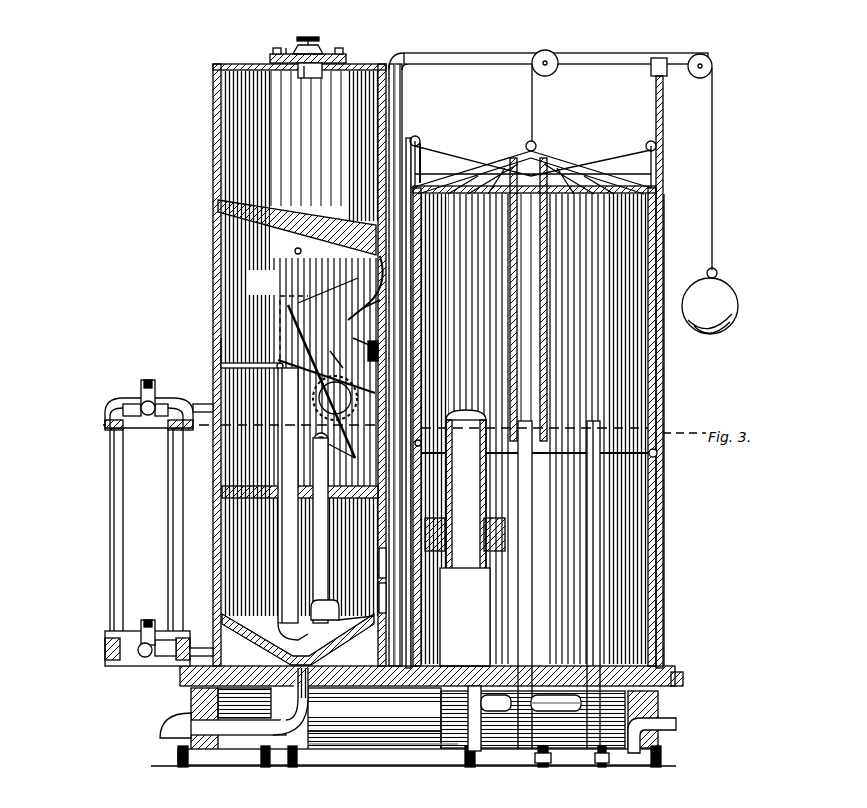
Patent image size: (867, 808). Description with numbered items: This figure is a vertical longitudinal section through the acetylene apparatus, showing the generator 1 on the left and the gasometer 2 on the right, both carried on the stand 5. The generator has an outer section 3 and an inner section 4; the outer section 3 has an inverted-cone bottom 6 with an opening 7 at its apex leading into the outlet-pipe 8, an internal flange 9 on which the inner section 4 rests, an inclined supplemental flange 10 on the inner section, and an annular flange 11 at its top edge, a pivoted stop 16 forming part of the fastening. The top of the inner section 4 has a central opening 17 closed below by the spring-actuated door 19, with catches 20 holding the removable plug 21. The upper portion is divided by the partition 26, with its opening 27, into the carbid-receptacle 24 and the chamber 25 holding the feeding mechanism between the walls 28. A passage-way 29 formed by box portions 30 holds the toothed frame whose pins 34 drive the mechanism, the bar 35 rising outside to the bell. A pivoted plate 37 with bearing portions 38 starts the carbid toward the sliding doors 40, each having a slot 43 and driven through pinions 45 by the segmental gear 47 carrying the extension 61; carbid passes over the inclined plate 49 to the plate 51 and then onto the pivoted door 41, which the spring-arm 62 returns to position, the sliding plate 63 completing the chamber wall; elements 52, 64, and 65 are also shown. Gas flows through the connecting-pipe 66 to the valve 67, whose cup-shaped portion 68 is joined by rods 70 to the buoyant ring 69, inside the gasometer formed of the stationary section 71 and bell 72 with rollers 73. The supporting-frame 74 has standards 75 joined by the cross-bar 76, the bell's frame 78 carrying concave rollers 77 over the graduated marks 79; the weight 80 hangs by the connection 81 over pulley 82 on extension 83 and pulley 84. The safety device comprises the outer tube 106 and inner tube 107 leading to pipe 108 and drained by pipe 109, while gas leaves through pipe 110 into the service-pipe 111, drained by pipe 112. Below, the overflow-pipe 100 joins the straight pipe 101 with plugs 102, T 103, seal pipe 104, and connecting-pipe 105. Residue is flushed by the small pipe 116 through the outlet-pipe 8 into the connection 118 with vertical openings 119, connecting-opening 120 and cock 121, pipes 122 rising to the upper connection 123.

The generator 1 is at (206, 345).
The gasometer 2 is at (546, 426).
The outer section 3 is at (212, 550).
The inner section 4 is at (206, 233).
The support or stand 5 is at (370, 750).
The bottom 6 is at (349, 627).
The opening 7 is at (298, 640).
The outlet-pipe 8 is at (232, 728).
The internally-arranged flange 9 is at (313, 500).
The supplemental flange 10 is at (312, 478).
The annular flange 11 is at (206, 354).
The stop 16 is at (312, 68).
The central opening 17 is at (306, 45).
The spring-actuated door or valve 19 is at (298, 70).
The catches 20 is at (264, 44).
The removable plug 21 is at (278, 44).
The carbid-receptacle chamber 24 is at (309, 138).
The chamber 25 is at (230, 290).
The partition 26 is at (297, 227).
The opening 27 is at (368, 256).
The walls 28 is at (263, 282).
The supplemental chamber or passage-way 29 is at (395, 104).
The box portions 30 is at (395, 82).
The pins 34 is at (385, 598).
The bar 35 is at (413, 156).
The plate 37 is at (328, 293).
The bearing portions 38 is at (385, 563).
The doors 40 is at (295, 330).
The door 41 is at (268, 352).
The central elongated slot 43 is at (335, 398).
The pinions 45 is at (335, 357).
The segmental gear 47 is at (365, 354).
The plate 49 is at (368, 313).
The plate 51 is at (272, 354).
The link 52 is at (359, 338).
The extension 61 is at (288, 495).
The spring-arm 62 is at (288, 388).
The sliding plate 63 is at (271, 300).
The pivot 64 is at (310, 440).
The pipe 65 is at (293, 591).
The connecting-pipe 66 is at (468, 584).
The valve 67 is at (480, 543).
The inverted-cup-shaped portion 68 is at (462, 406).
The ring-shaped portion 69 is at (498, 522).
The depending rods 70 is at (478, 490).
The stationary section 71 is at (573, 587).
The bell or telescoping section 72 is at (548, 338).
The rollers 73 is at (440, 390).
The supporting-frame 74 is at (679, 430).
The vertical standards 75 is at (404, 122).
The cross-bar 76 is at (498, 58).
The concave rollers 77 is at (413, 135).
The frame 78 is at (518, 136).
The graduated marks 79 is at (656, 228).
The weight 80 is at (730, 302).
The connection 81 is at (706, 156).
The pulley 82 is at (704, 62).
The extension 83 is at (665, 68).
The pulley 84 is at (550, 50).
The overflow-pipe 100 is at (285, 730).
The pipe 101 is at (405, 752).
The removable plugs 102 is at (170, 748).
The T 103 is at (600, 757).
The short pipe 104 is at (668, 720).
The connecting-pipe 105 is at (463, 758).
The outer tubular portion 106 is at (540, 293).
The inner tubular portion 107 is at (556, 669).
The pipe 108 is at (485, 688).
The pipe 109 is at (563, 732).
The pipe 110 is at (580, 548).
The service-pipe 111 is at (540, 688).
The pipe 112 is at (540, 756).
The small pipe 116 is at (325, 599).
The connection 118 is at (97, 636).
The vertical openings 119 is at (98, 400).
The connecting-opening 120 is at (120, 396).
The cock 121 is at (136, 372).
The pipes 122 is at (160, 515).
The connection 123 is at (96, 418).